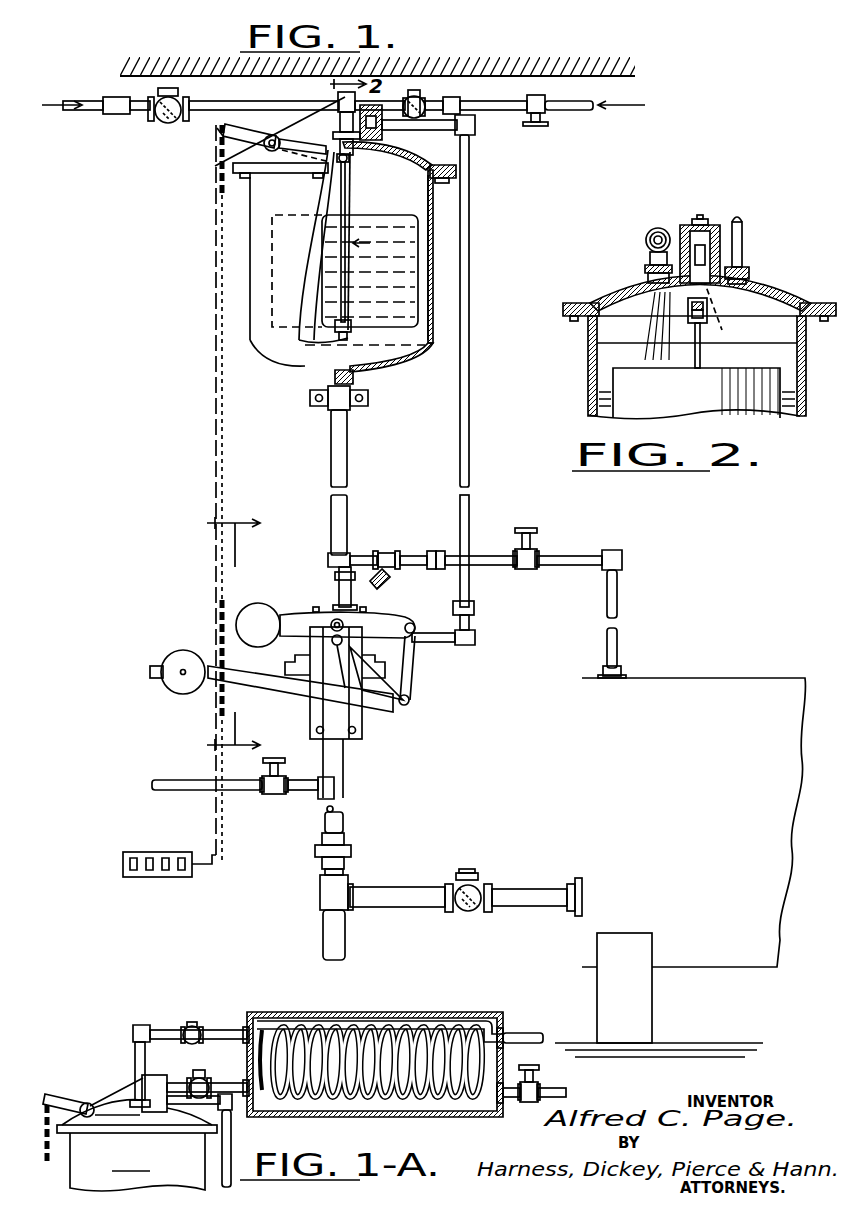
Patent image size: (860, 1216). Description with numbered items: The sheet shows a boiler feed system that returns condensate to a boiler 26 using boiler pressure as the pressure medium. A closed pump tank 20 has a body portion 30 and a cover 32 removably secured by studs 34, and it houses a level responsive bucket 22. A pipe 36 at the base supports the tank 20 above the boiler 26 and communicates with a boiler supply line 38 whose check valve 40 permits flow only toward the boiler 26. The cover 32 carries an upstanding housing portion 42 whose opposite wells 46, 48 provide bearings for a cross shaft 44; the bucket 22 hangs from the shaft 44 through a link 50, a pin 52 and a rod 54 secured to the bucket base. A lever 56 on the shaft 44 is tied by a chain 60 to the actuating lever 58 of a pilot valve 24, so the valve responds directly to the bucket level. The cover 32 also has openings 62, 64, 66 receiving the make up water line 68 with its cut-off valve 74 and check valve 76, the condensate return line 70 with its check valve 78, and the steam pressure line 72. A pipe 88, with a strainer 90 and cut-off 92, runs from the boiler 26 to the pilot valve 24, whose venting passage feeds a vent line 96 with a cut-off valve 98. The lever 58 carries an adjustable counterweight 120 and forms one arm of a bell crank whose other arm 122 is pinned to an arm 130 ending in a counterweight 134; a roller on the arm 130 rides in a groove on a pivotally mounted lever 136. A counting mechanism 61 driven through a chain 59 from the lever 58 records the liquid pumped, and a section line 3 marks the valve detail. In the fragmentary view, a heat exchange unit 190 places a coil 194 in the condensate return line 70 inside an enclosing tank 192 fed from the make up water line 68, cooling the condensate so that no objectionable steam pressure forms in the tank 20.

In FIG. 1, the section line 3- 3 is at (244, 639).
In FIG. 1, the pump tank 20 is at (447, 227).
In FIG. 1A, the pump tank 20 is at (137, 1133).
In FIG. 1, the bucket 22 is at (429, 276).
In FIG. 2, the bucket 22 is at (697, 367).
In FIG. 1, the pilot valve 24 is at (326, 597).
In FIG. 1, the boiler 26 is at (680, 867).
In FIG. 1, the body portion 30 is at (435, 310).
In FIG. 2, the cover 32 is at (773, 290).
In FIG. 2, the studs 34 is at (572, 321).
In FIG. 1, the pipe 36 is at (348, 447).
In FIG. 1, the boiler supply line 38 is at (380, 887).
In FIG. 1, the check valve 40 is at (478, 872).
In FIG. 1, the housing portion 42 is at (339, 100).
In FIG. 2, the housing portion 42 is at (715, 245).
In FIG. 1, the cross shaft 44 is at (268, 134).
In FIG. 2, the well 46 is at (693, 240).
In FIG. 2, the well 48 is at (722, 255).
In FIG. 1, the link 50 is at (288, 174).
In FIG. 2, the link 50 is at (688, 308).
In FIG. 1, the pin 52 is at (352, 158).
In FIG. 1, the rod 54 is at (345, 210).
In FIG. 2, the rod 54 is at (701, 360).
In FIG. 1, the lever 56 is at (225, 134).
In FIG. 1A, the lever 56 is at (65, 1097).
In FIG. 1, the actuating lever 58 is at (257, 690).
In FIG. 1, the chain 59 is at (208, 690).
In FIG. 1, the chain 60 is at (220, 186).
In FIG. 1A, the chain 60 is at (47, 1163).
In FIG. 1, the counting mechanism 61 is at (176, 855).
In FIG. 2, the opening 62 is at (773, 290).
In FIG. 2, the opening 64 is at (647, 272).
In FIG. 1, the opening 66 is at (390, 132).
In FIG. 1, the make up water line 68 is at (384, 101).
In FIG. 2, the make up water line 68 is at (745, 218).
In FIG. 1A, the make up water line 68 is at (158, 1030).
In FIG. 1, the condensate return line 70 is at (200, 101).
In FIG. 2, the condensate return line 70 is at (655, 226).
In FIG. 1A, the condensate return line 70 is at (510, 1033).
In FIG. 1, the steam pressure line 72 is at (468, 188).
In FIG. 2, the steam pressure line 72 is at (710, 312).
In FIG. 1A, the steam pressure line 72 is at (233, 1132).
In FIG. 1, the cut-off valve 74 is at (538, 96).
In FIG. 1A, the cut-off valve 74 is at (535, 1088).
In FIG. 1, the check valve 76 is at (418, 92).
In FIG. 2, the check valve 76 is at (702, 218).
In FIG. 1A, the check valve 76 is at (200, 1026).
In FIG. 1, the check valve 78 is at (165, 88).
In FIG. 1A, the check valve 78 is at (197, 1073).
In FIG. 1, the pipe 88 is at (478, 556).
In FIG. 1, the strainer 90 is at (392, 552).
In FIG. 1, the cut-off 92 is at (540, 548).
In FIG. 1, the vent line 96 is at (320, 792).
In FIG. 1, the cut-off valve 98 is at (273, 794).
In FIG. 1, the counterweight 120 is at (190, 650).
In FIG. 1, the bell crank arm 122 is at (413, 665).
In FIG. 1, the arm 130 is at (385, 620).
In FIG. 1, the counterweight 134 is at (289, 625).
In FIG. 1, the lever 136 is at (347, 645).
In FIG. 1A, the heat exchange unit 190 is at (427, 1121).
In FIG. 1A, the enclosing tank 192 is at (385, 1012).
In FIG. 1A, the coil 194 is at (292, 1030).